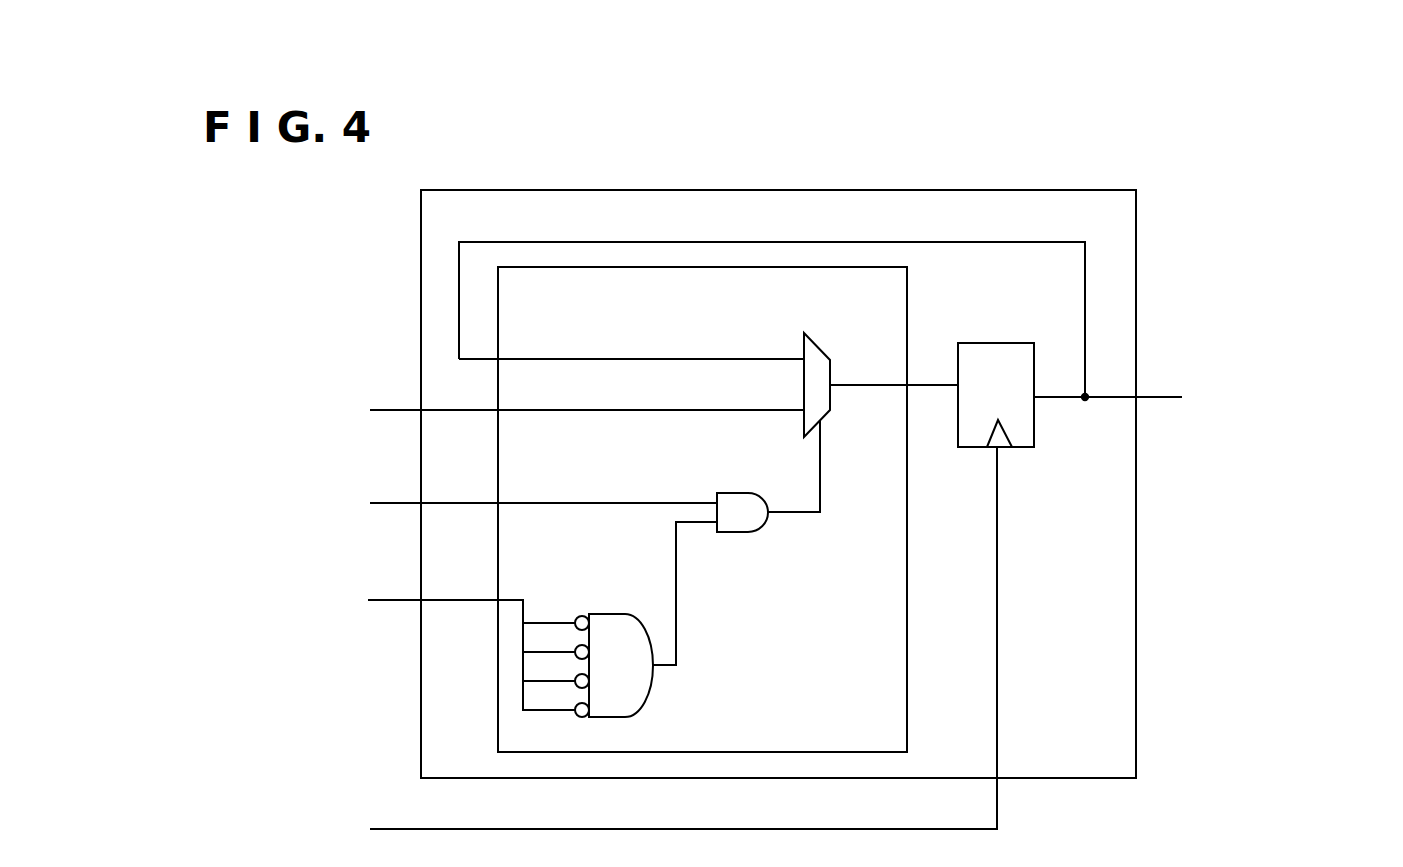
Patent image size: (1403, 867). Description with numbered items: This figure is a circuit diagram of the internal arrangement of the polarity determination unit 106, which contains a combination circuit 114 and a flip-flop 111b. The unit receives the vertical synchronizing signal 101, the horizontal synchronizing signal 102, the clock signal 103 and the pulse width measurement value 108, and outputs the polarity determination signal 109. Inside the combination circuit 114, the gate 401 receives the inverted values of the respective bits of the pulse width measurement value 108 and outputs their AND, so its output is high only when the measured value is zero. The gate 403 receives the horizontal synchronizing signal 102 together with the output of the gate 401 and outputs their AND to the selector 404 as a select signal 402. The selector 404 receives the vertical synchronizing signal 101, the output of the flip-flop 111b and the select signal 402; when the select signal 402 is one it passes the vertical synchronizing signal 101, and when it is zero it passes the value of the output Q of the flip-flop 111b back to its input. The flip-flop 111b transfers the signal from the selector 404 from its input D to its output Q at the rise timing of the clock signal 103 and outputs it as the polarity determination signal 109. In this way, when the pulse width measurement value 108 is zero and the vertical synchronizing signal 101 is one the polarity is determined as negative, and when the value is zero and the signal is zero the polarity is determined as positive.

The polarity determination unit 106 is at (822, 190).
The combination circuit 114 is at (885, 735).
The vertical synchronizing signal 101 is at (278, 368).
The horizontal synchronizing signal 102 is at (259, 520).
The pulse width measurement value 108 is at (262, 631).
The gate 401 is at (616, 613).
The gate 403 is at (732, 493).
The select signal 402 is at (836, 566).
The selector 404 is at (804, 347).
The flip-flop 111b is at (1000, 343).
The polarity determination signal 109 is at (1262, 357).
The clock signal 103 is at (292, 815).